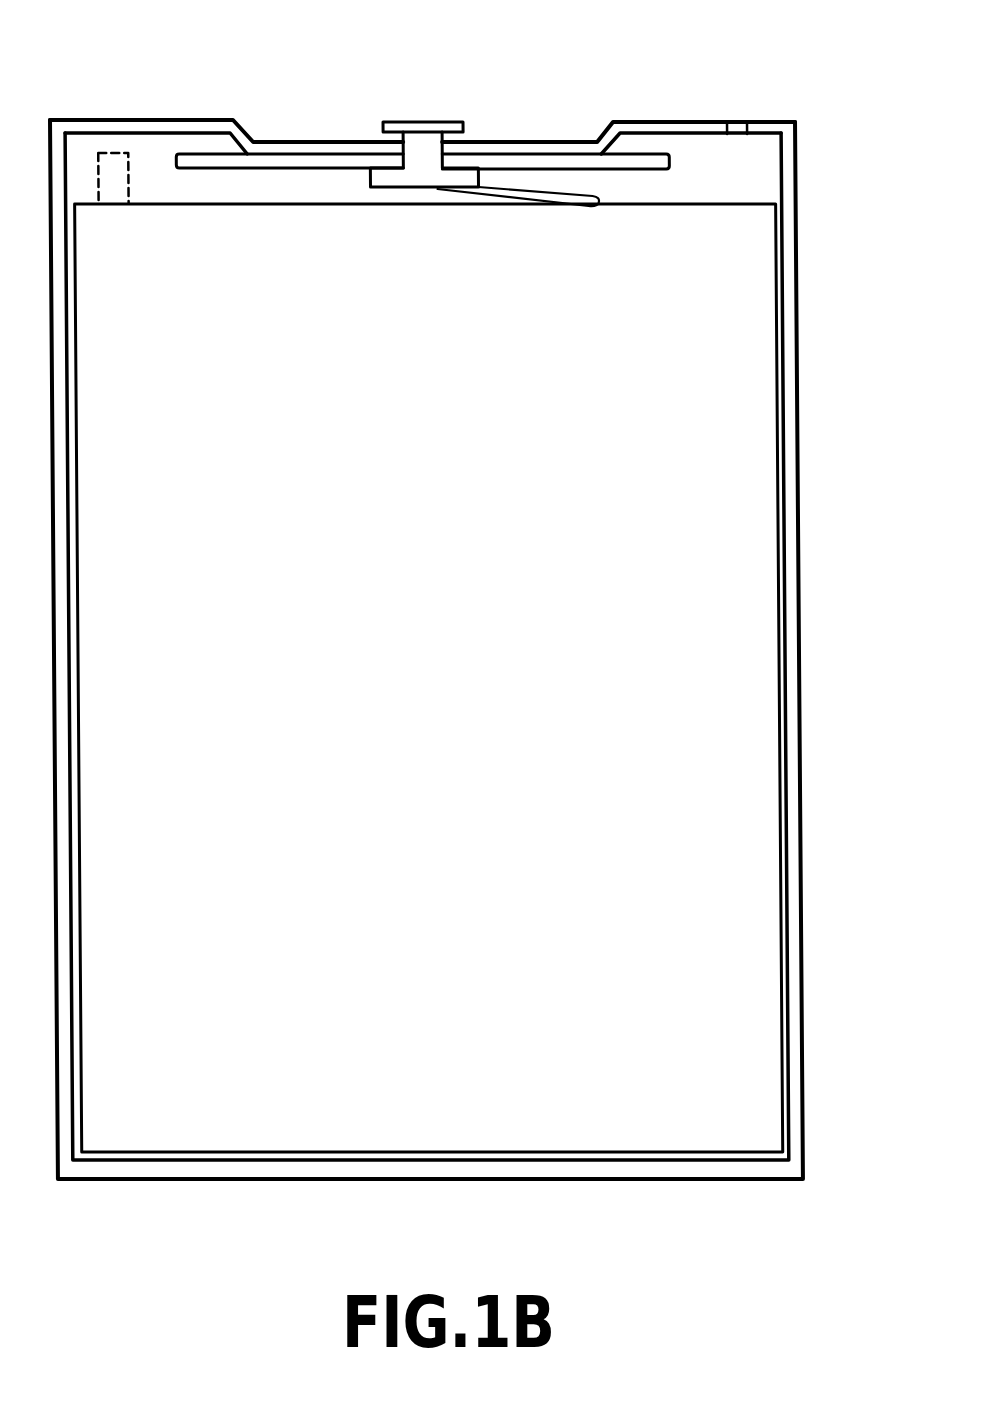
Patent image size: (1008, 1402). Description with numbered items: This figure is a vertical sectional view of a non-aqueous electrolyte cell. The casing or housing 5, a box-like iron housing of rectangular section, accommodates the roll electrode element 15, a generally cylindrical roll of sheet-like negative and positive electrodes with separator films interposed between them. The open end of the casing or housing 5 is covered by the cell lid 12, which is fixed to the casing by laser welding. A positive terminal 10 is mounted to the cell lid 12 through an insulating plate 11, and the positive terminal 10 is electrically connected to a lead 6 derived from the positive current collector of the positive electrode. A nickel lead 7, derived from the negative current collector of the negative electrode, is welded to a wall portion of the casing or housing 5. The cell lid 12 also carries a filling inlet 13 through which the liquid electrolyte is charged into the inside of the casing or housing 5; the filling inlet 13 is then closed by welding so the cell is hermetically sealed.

The casing or housing 5 is at (794, 700).
The lead tab 6 is at (576, 192).
The nickel lead 7 is at (110, 152).
The positive terminal 10 is at (423, 128).
The insulating plate 11 is at (535, 156).
The cell lid 12 is at (648, 122).
The filling inlet 13 is at (740, 122).
The roll electrode element 15 is at (680, 543).